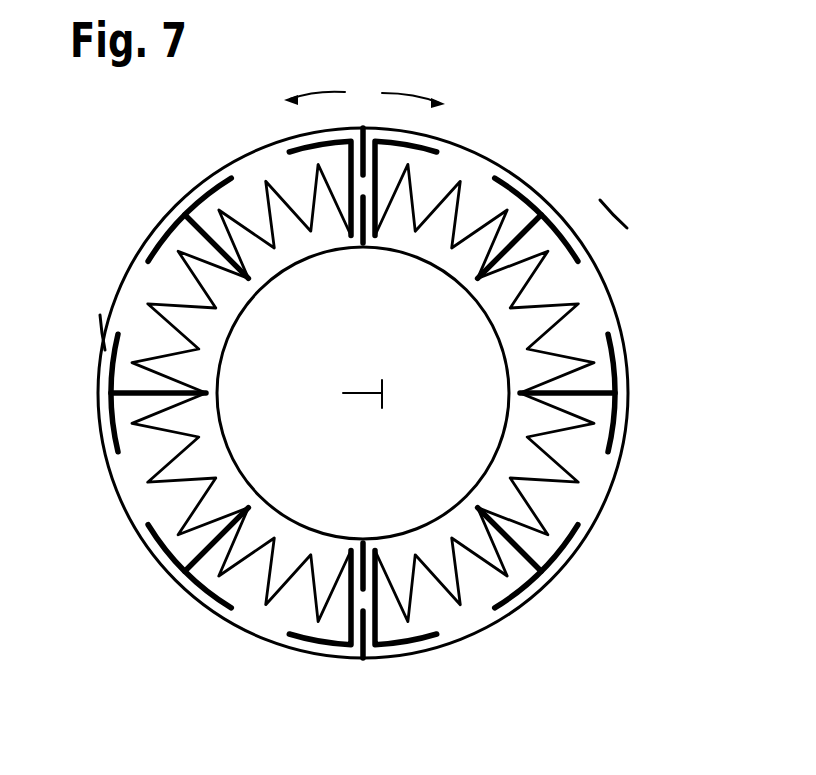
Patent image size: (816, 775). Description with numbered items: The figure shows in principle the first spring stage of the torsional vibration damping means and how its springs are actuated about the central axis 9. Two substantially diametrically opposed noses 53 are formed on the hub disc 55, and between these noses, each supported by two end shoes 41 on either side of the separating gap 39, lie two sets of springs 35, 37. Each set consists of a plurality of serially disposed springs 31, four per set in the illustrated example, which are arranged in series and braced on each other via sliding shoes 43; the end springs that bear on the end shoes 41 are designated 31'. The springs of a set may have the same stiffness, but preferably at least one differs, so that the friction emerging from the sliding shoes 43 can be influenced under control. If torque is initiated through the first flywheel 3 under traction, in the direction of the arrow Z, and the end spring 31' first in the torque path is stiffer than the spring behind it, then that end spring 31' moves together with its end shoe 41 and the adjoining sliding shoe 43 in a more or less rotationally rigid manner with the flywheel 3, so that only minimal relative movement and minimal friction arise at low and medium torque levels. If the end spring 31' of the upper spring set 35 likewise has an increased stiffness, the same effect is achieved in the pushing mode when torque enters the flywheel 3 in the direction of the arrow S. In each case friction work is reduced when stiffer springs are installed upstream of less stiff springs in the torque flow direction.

The first flywheel 3 is at (601, 275).
The axis of rotation 9 is at (366, 392).
The springs 31 is at (384, 377).
The end springs 31' is at (364, 401).
The set of springs 35 is at (632, 225).
The set of springs 37 is at (95, 312).
The radial slot 39 is at (356, 127).
The end shoes 41 is at (300, 140).
The sliding shoes 43 is at (162, 218).
The noses 53 is at (365, 243).
The hub disc 55 is at (240, 318).
The arrow Z is at (314, 79).
The arrow S is at (413, 81).